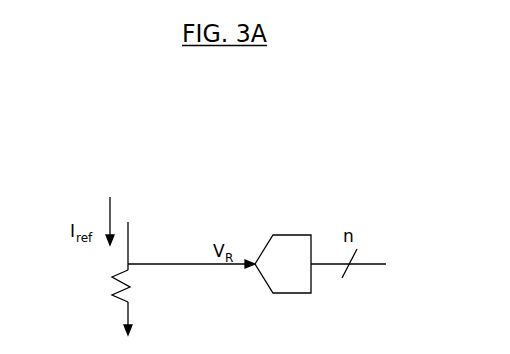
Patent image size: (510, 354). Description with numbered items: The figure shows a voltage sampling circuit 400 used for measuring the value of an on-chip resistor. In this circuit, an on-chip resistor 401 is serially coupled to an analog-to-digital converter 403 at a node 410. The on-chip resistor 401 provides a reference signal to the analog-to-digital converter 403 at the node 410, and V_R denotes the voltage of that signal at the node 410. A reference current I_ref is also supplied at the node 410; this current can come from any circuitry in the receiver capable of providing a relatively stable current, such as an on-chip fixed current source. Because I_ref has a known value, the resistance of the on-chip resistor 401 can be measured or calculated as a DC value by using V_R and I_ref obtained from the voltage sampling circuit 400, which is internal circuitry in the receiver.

The voltage sampling circuit 400 is at (366, 149).
The on-chip resistor 401 is at (111, 283).
The analog-to-digital converter 403 is at (285, 234).
The node 410 is at (165, 262).